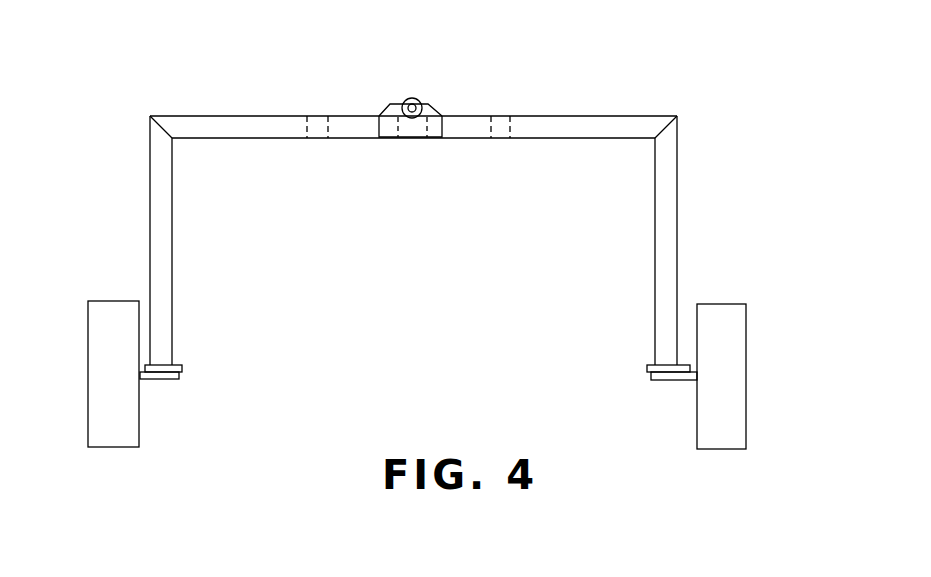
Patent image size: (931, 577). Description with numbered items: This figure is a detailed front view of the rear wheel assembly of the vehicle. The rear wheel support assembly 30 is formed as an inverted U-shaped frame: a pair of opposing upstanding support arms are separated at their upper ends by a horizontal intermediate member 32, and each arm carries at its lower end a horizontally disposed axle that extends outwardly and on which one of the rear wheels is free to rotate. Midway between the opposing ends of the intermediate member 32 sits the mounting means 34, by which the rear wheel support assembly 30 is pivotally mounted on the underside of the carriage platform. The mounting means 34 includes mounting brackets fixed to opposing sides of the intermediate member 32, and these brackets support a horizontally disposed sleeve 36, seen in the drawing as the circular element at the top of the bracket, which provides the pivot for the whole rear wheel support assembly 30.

The rear wheel support assembly 30 is at (424, 216).
The intermediate member 32 is at (533, 136).
The mounting means 34 is at (419, 68).
The sleeve 36 is at (390, 82).